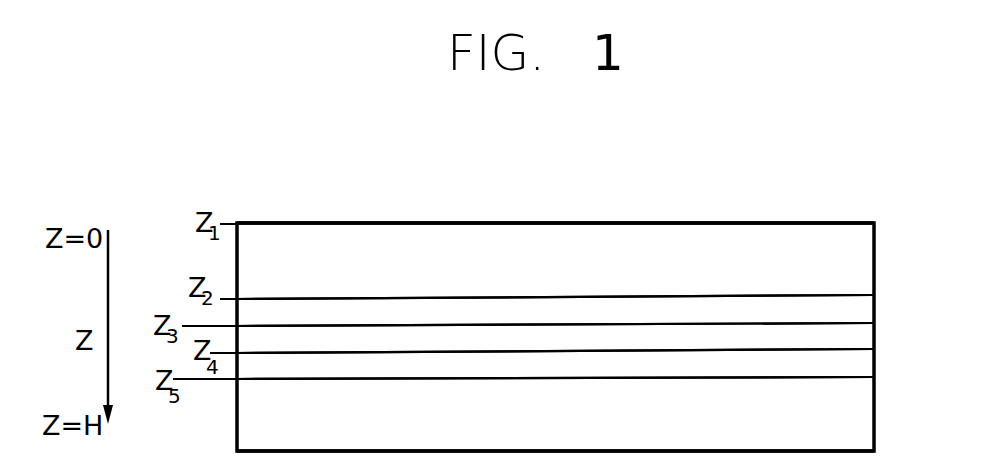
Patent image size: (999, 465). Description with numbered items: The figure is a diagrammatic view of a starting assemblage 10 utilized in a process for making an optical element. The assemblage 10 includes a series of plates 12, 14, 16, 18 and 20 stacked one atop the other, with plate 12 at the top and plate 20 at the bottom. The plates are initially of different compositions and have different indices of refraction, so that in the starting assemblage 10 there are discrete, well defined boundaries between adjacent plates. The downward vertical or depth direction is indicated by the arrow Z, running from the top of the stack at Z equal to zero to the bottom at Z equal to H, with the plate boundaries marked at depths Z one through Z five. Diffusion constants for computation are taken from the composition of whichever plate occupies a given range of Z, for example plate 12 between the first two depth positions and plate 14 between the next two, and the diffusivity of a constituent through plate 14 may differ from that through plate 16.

The starting assemblage 10 is at (906, 216).
The plate 12 is at (875, 275).
The plate 14 is at (875, 307).
The plate 16 is at (875, 335).
The plate 18 is at (875, 362).
The plate 20 is at (875, 420).